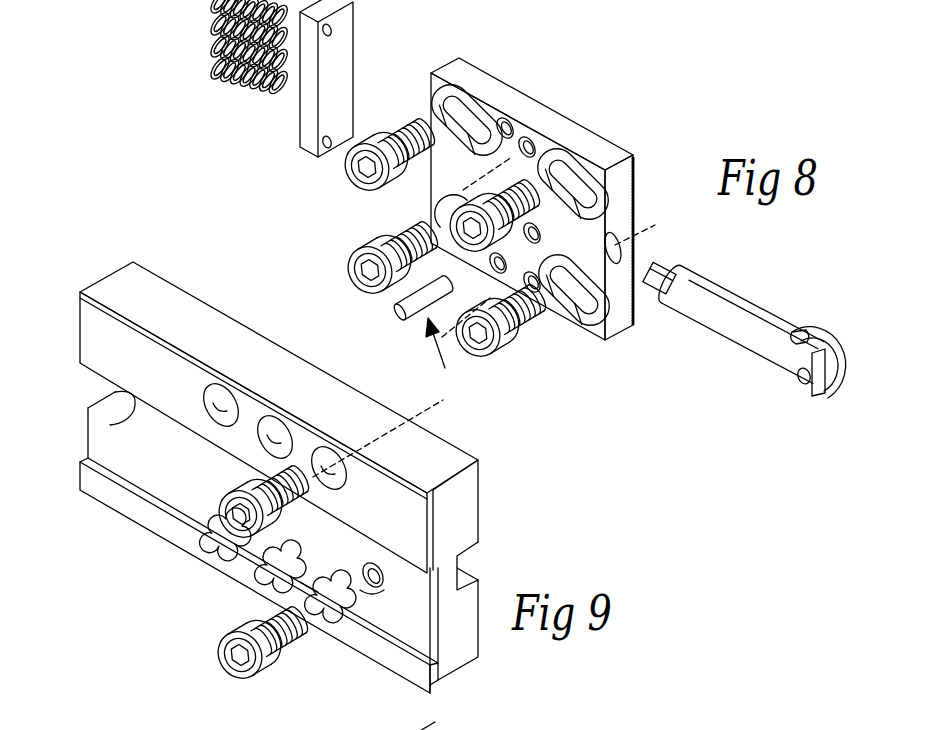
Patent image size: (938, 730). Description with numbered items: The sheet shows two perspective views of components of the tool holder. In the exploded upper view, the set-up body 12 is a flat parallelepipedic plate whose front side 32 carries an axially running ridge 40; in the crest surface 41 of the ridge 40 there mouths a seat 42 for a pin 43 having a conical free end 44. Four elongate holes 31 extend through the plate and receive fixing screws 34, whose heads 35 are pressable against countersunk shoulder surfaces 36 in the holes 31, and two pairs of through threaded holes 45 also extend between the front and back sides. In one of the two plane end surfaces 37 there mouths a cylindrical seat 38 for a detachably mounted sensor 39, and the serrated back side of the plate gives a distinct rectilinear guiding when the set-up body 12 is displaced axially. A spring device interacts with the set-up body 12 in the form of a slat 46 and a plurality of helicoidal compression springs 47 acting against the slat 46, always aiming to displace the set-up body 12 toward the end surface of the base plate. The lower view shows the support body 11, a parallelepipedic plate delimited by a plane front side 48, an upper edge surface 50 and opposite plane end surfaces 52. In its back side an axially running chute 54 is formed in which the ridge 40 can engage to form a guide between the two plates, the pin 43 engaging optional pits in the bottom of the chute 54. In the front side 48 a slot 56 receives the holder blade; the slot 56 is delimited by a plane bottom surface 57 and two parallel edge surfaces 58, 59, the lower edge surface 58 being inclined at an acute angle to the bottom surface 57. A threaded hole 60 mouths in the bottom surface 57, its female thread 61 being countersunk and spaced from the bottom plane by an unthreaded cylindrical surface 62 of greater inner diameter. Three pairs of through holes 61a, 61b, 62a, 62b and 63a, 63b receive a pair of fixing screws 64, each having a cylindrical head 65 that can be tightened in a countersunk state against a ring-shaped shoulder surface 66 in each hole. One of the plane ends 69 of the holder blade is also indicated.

In FIG. 9, the support body 11 is at (295, 461).
In FIG. 8, the set-up body 12 is at (560, 212).
In FIG. 8, the elongate holes 31 is at (575, 180).
In FIG. 8, the front side 32 is at (536, 179).
In FIG. 8, the fixing screws 34 is at (517, 340).
In FIG. 8, the heads 35 is at (352, 270).
In FIG. 8, the countersunk shoulder surfaces 36 is at (595, 315).
In FIG. 8, the end surfaces 37 is at (622, 208).
In FIG. 8, the cylindrical seat 38 is at (621, 250).
In FIG. 8, the sensor 39 is at (744, 308).
In FIG. 8, the ridge 40 is at (372, 115).
In FIG. 8, the crest surface 41 is at (420, 170).
In FIG. 8, the seat 42 is at (530, 242).
In FIG. 8, the pin 43 is at (442, 354).
In FIG. 8, the conical free end 44 is at (400, 312).
In FIG. 8, the threaded holes 45 is at (503, 120).
In FIG. 8, the slat 46 is at (305, 128).
In FIG. 8, the compression springs 47 is at (240, 78).
In FIG. 9, the front side 48 is at (392, 514).
In FIG. 9, the upper edge surface 50 is at (412, 451).
In FIG. 9, the end surface 52 is at (475, 641).
In FIG. 9, the chute 54 is at (470, 560).
In FIG. 9, the slot 56 is at (88, 425).
In FIG. 9, the bottom surface 57 is at (174, 462).
In FIG. 9, the lower edge surface 58 is at (112, 472).
In FIG. 9, the upper edge surface 59 is at (147, 413).
In FIG. 9, the threaded hole 60 is at (372, 588).
In FIG. 9, the female thread 61 is at (370, 568).
In FIG. 9, the through hole 61a is at (318, 458).
In FIG. 9, the through hole 61b is at (332, 618).
In FIG. 9, the cylindrical surface 62 is at (367, 570).
In FIG. 9, the through hole 62a is at (268, 428).
In FIG. 9, the through hole 62b is at (278, 576).
In FIG. 9, the through hole 63a is at (213, 398).
In FIG. 9, the through hole 63b is at (228, 546).
In FIG. 9, the fixing screws 64 is at (282, 486).
In FIG. 9, the head 65 is at (263, 592).
In FIG. 9, the ring-shaped shoulder surface 66 is at (287, 562).
In FIG. 9, the ends 69 is at (443, 715).